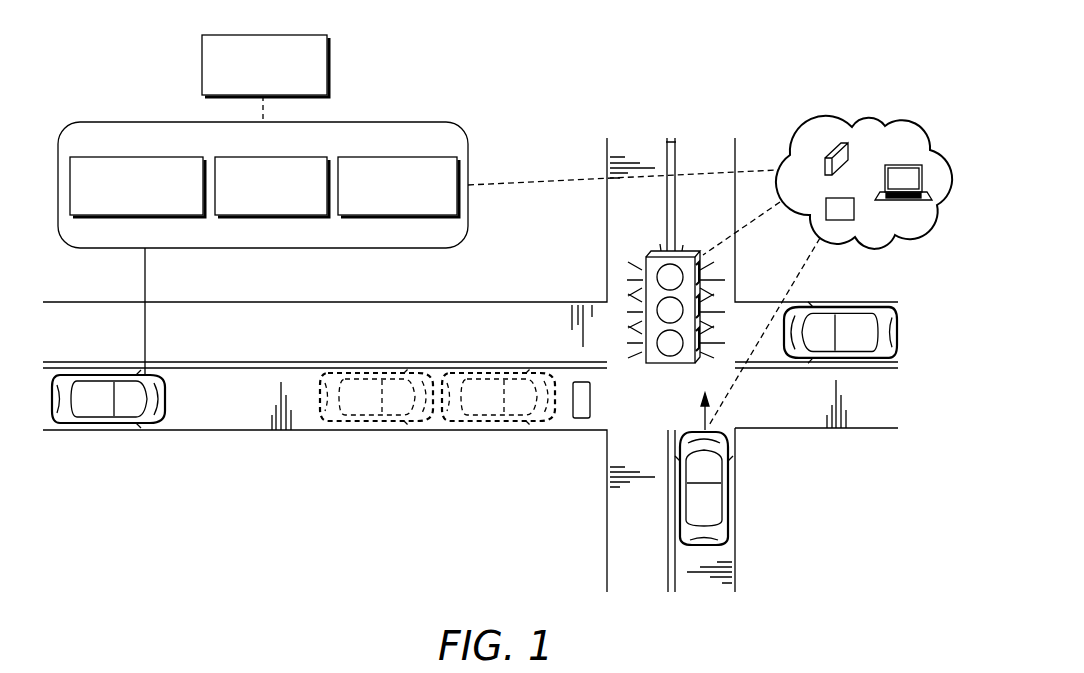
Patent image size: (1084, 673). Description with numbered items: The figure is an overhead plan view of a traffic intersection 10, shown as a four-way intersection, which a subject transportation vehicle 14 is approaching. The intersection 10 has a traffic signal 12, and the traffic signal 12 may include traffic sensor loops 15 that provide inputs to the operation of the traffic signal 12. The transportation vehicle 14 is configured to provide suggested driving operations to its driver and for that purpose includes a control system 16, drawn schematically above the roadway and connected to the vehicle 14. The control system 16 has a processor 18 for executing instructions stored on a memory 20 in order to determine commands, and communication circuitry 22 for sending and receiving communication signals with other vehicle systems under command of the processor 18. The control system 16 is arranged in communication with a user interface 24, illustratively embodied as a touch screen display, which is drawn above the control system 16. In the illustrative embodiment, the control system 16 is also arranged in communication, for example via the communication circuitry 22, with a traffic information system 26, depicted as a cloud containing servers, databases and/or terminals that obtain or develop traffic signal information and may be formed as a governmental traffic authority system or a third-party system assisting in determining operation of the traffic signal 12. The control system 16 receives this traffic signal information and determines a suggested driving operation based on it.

The traffic intersection 10 is at (575, 255).
The traffic signal 12 is at (662, 250).
The transportation vehicle 14 is at (102, 420).
The traffic sensor loops 15 is at (581, 418).
The control system 16 is at (108, 122).
The processor 18 is at (122, 157).
The memory 20 is at (268, 157).
The communication circuitry 22 is at (393, 157).
The user interface 24 is at (330, 64).
The traffic information system 26 is at (860, 108).